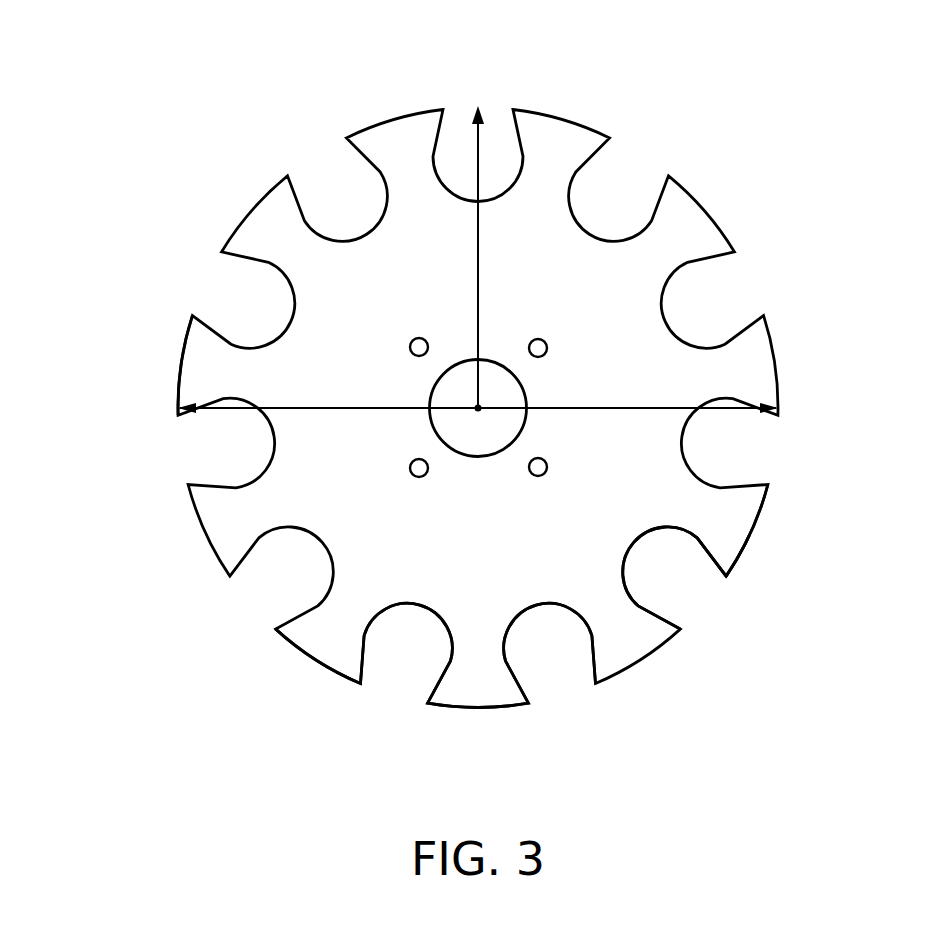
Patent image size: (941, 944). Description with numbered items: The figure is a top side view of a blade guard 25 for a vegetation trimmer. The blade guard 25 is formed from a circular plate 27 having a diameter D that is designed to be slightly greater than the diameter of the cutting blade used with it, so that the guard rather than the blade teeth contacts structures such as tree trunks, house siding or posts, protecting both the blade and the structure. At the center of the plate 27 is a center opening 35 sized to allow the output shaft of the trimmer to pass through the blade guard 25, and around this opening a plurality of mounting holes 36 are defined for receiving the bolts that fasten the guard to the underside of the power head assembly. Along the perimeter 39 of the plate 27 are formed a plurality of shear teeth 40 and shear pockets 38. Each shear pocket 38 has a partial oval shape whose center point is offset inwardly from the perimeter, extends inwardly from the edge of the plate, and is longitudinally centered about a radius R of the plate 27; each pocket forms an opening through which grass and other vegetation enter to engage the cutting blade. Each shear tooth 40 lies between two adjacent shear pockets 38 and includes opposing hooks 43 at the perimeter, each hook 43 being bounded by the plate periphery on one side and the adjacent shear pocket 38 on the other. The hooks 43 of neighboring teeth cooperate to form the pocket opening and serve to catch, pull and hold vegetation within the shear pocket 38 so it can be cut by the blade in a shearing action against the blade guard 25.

The blade guard 25 is at (176, 527).
The circular plate 27 is at (198, 375).
The center opening 35 is at (430, 435).
The mounting holes 36 is at (412, 340).
The shear pocket 38 is at (715, 594).
The perimeter 39 is at (764, 518).
The shear tooth 40 is at (738, 557).
The hook 43 is at (276, 629).
The radius R is at (478, 262).
The diameter D is at (680, 407).